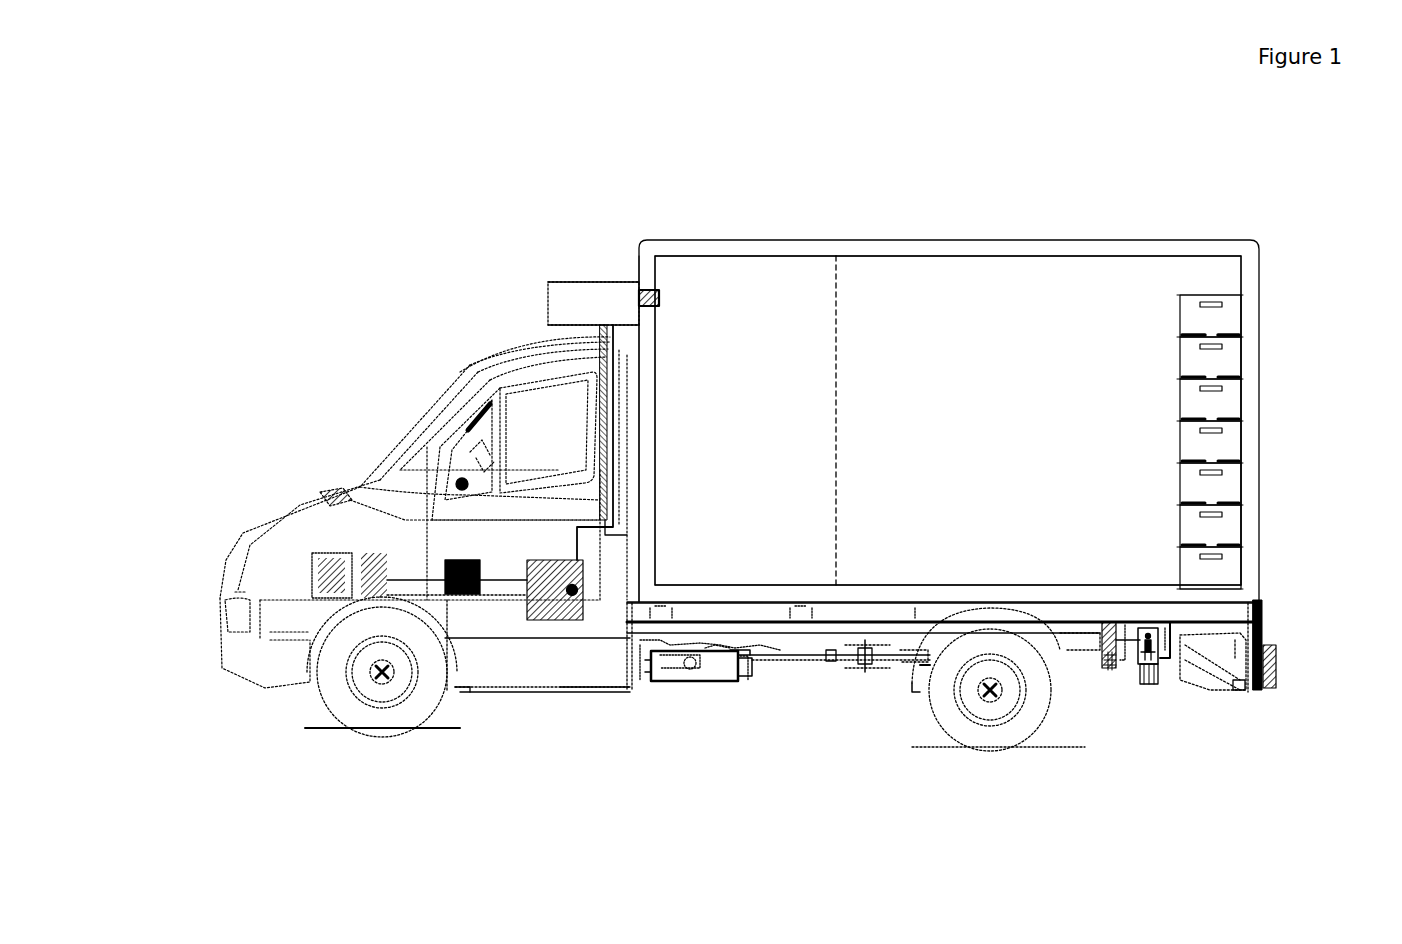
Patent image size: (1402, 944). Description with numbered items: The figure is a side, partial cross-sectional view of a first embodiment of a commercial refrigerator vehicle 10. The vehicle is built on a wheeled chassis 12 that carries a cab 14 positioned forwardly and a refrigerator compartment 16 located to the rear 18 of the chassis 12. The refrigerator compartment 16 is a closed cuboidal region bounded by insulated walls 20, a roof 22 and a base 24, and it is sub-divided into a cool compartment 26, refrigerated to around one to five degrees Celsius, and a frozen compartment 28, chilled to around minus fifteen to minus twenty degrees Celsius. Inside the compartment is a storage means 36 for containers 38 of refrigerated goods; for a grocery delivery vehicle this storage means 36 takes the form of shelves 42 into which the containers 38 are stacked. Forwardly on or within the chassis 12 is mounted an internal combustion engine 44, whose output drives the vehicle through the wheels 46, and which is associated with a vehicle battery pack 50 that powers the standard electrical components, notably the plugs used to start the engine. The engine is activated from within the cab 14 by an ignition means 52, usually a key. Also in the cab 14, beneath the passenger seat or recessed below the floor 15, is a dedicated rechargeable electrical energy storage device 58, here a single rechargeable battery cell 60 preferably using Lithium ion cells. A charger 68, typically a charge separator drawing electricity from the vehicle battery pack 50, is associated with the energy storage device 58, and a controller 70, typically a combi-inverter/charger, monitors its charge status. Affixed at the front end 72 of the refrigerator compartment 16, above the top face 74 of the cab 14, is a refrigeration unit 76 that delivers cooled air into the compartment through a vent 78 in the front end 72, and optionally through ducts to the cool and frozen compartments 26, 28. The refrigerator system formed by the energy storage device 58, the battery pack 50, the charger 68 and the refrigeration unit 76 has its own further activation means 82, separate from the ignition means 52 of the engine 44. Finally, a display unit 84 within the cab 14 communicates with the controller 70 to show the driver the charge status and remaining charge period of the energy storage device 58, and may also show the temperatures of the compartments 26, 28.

The commercial refrigerator vehicle 10 is at (733, 495).
The wheeled chassis 12 is at (775, 662).
The cab 14 is at (363, 460).
The floor 15 is at (565, 694).
The refrigerator compartment 16 is at (925, 250).
The rear 18 is at (1118, 682).
The insulated walls 20 is at (656, 433).
The roof 22 is at (980, 258).
The base 24 is at (897, 576).
The cool compartment 26 is at (1117, 292).
The frozen compartment 28 is at (773, 270).
The storage means 36 is at (1185, 442).
The containers 38 is at (1235, 492).
The shelves 42 is at (1240, 337).
The internal combustion engine 44 is at (322, 573).
The wheels 46 is at (343, 697).
The vehicle battery pack 50 is at (355, 583).
The ignition means 52 is at (460, 476).
The dedicated rechargeable electrical energy storage device 58 is at (565, 623).
The single rechargeable battery cell 60 is at (555, 590).
The charger 68 is at (458, 600).
The controller 70 is at (462, 577).
The front end 72 is at (636, 262).
The top face 74 is at (500, 348).
The refrigeration unit 76 is at (545, 300).
The vent 78 is at (665, 298).
The further activation means 82 is at (572, 598).
The display unit 84 is at (487, 426).